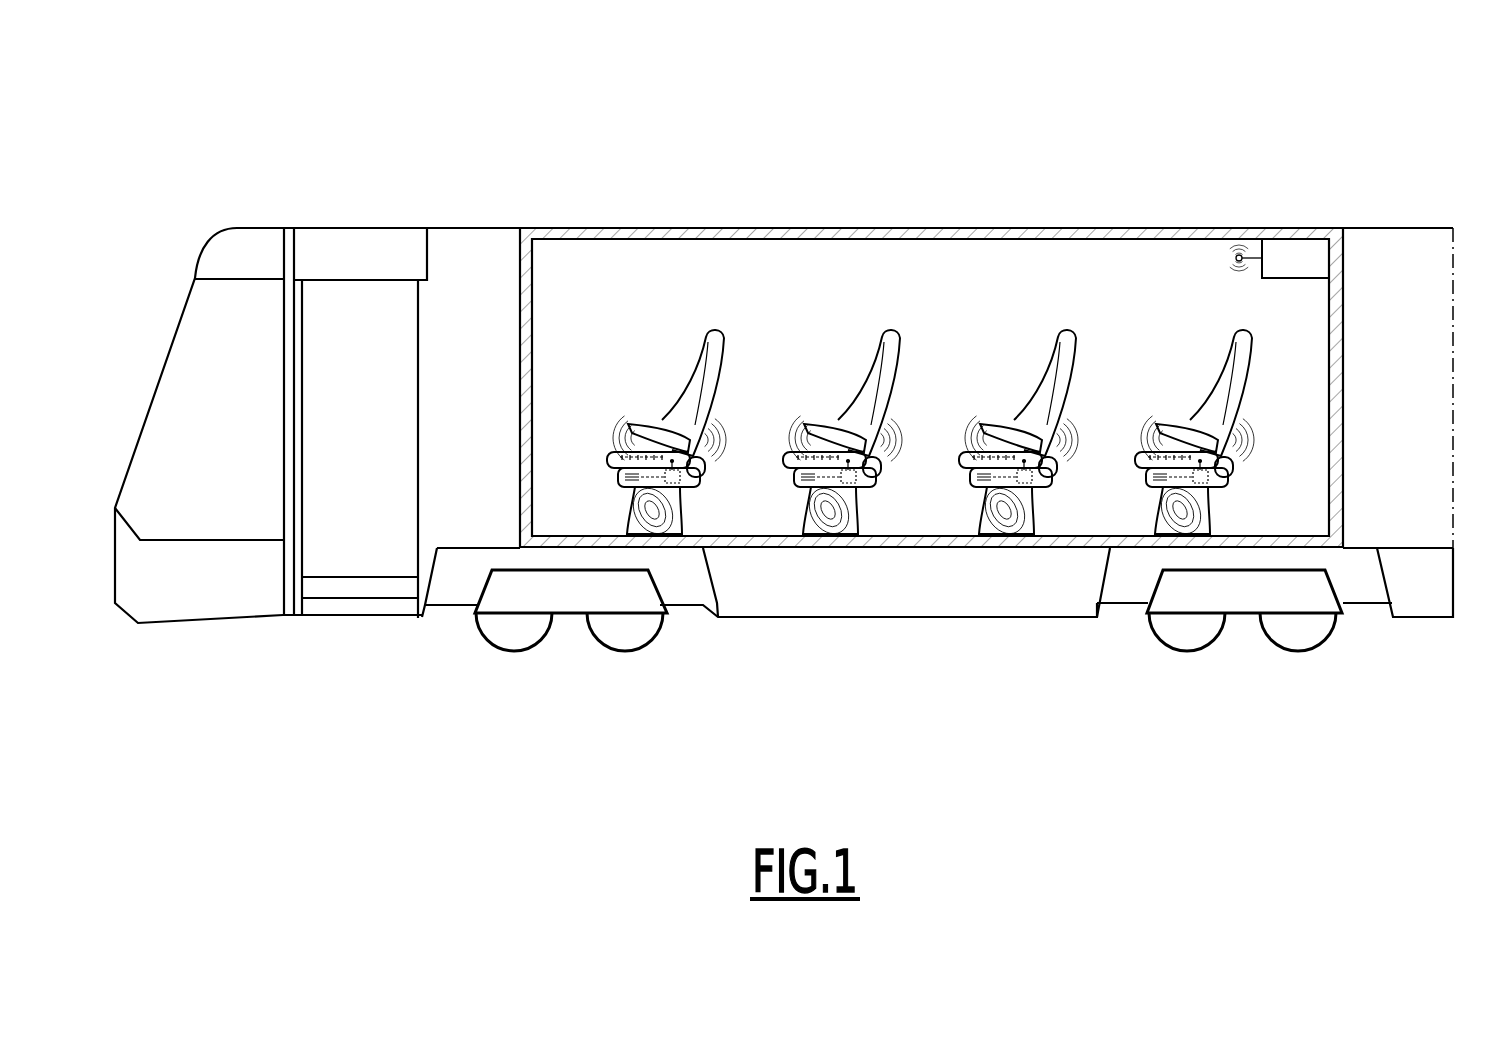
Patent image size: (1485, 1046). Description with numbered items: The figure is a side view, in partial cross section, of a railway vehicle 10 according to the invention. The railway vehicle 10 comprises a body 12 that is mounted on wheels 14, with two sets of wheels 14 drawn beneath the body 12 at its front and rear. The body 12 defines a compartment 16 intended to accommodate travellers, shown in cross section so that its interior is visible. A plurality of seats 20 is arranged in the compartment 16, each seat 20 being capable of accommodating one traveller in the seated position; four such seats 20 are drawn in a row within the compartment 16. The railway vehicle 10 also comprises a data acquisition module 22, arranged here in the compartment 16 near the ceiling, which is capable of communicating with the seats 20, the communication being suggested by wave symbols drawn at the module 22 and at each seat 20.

The railway vehicle 10 is at (1070, 145).
The body 12 is at (470, 227).
The wheels 14 is at (507, 632).
The compartment 16 is at (573, 303).
The seats 20 is at (878, 328).
The data acquisition module 22 is at (1288, 258).